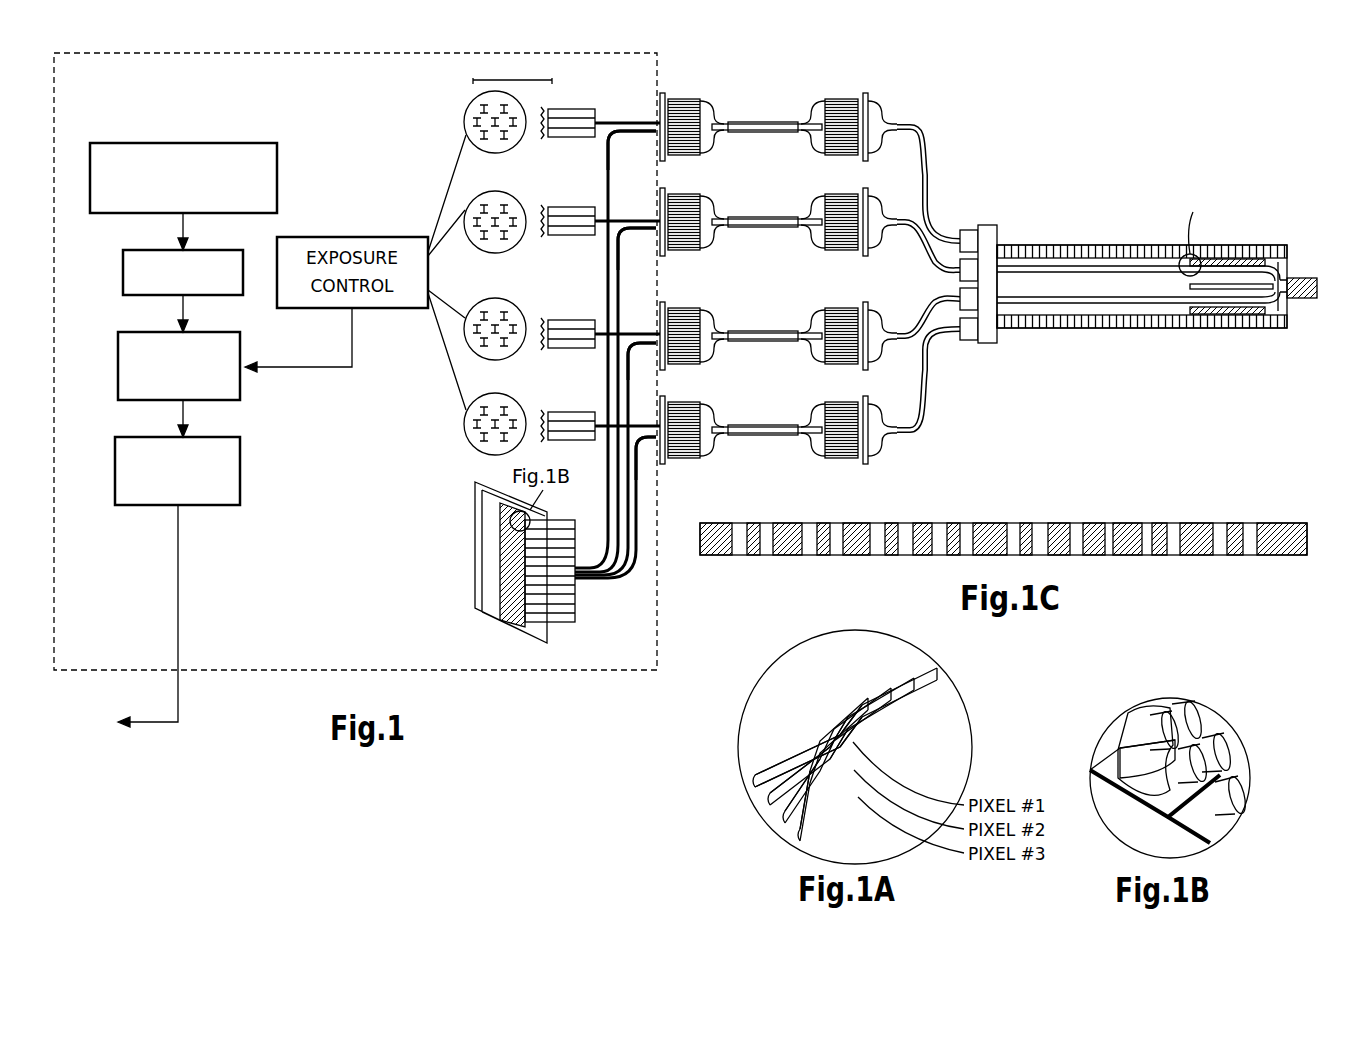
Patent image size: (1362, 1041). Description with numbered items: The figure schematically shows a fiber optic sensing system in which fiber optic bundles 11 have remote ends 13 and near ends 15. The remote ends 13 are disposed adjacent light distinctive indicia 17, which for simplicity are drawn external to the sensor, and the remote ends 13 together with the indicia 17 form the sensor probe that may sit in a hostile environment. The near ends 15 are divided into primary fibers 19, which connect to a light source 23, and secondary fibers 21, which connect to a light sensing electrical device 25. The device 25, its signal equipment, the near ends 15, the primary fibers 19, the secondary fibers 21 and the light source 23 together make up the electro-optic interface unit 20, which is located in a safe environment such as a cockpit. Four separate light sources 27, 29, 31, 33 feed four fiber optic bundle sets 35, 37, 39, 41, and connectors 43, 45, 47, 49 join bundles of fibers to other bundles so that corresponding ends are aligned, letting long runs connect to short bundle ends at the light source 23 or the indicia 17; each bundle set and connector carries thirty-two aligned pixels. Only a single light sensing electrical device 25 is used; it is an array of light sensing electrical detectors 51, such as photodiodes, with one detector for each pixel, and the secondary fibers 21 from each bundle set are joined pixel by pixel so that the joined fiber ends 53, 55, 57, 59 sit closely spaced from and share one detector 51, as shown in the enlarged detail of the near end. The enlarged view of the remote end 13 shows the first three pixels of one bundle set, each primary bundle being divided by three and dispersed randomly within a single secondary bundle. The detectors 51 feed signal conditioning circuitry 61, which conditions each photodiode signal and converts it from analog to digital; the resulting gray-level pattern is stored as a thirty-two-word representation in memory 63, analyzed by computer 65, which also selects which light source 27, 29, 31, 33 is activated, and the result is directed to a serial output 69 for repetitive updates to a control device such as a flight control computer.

In FIG. 1, the fiber optic bundles 11 is at (778, 137).
In FIG. 1, the remote ends 13 is at (1138, 288).
In FIG. 1A, the remote ends 13 is at (889, 672).
In FIG. 1, the near ends 15 is at (657, 95).
In FIG. 1, the light distinctive indicia 17 is at (1137, 332).
In FIG. 1C, the light distinctive indicia 17 is at (1092, 524).
In FIG. 1, the primary fibers 19 is at (621, 118).
In FIG. 1A, the primary fibers 19 is at (752, 770).
In FIG. 1, the electro-optic interface unit 20 is at (652, 605).
In FIG. 1, the secondary fibers 21 is at (607, 172).
In FIG. 1A, the secondary fibers 21 is at (800, 836).
In FIG. 1B, the secondary fibers 21 is at (1130, 728).
In FIG. 1, the light source 23 is at (512, 70).
In FIG. 1, the light sensing electrical device 25 is at (475, 615).
In FIG. 1B, the light sensing electrical device 25 is at (1092, 778).
In FIG. 1, the first light source 27 is at (465, 120).
In FIG. 1, the second light source 29 is at (468, 206).
In FIG. 1, the third light source 31 is at (468, 342).
In FIG. 1, the fourth light source 33 is at (467, 424).
In FIG. 1, the first fiber optic bundle set 35 is at (897, 117).
In FIG. 1A, the first fiber optic bundle set 35 is at (826, 740).
In FIG. 1, the second fiber optic bundle set 37 is at (897, 212).
In FIG. 1, the third fiber optic bundle set 39 is at (897, 326).
In FIG. 1, the fourth fiber optic bundle set 41 is at (897, 420).
In FIG. 1, the first connector 43 is at (690, 115).
In FIG. 1, the second connector 45 is at (690, 205).
In FIG. 1, the third connector 47 is at (690, 318).
In FIG. 1, the fourth connector 49 is at (688, 412).
In FIG. 1, the light sensing electrical detectors 51 is at (505, 580).
In FIG. 1B, the light sensing electrical detectors 51 is at (1170, 833).
In FIG. 1, the joined fibers 53 is at (643, 133).
In FIG. 1B, the joined fibers 53 is at (1168, 722).
In FIG. 1, the joined fibers 55 is at (627, 237).
In FIG. 1B, the joined fibers 55 is at (1192, 718).
In FIG. 1, the joined fibers 57 is at (640, 348).
In FIG. 1B, the joined fibers 57 is at (1198, 757).
In FIG. 1, the joined fibers 59 is at (650, 462).
In FIG. 1B, the joined fibers 59 is at (1225, 748).
In FIG. 1, the signal conditioning circuitry 61 is at (277, 175).
In FIG. 1, the memory 63 is at (242, 266).
In FIG. 1, the computer 65 is at (240, 383).
In FIG. 1, the serial output 69 is at (240, 465).